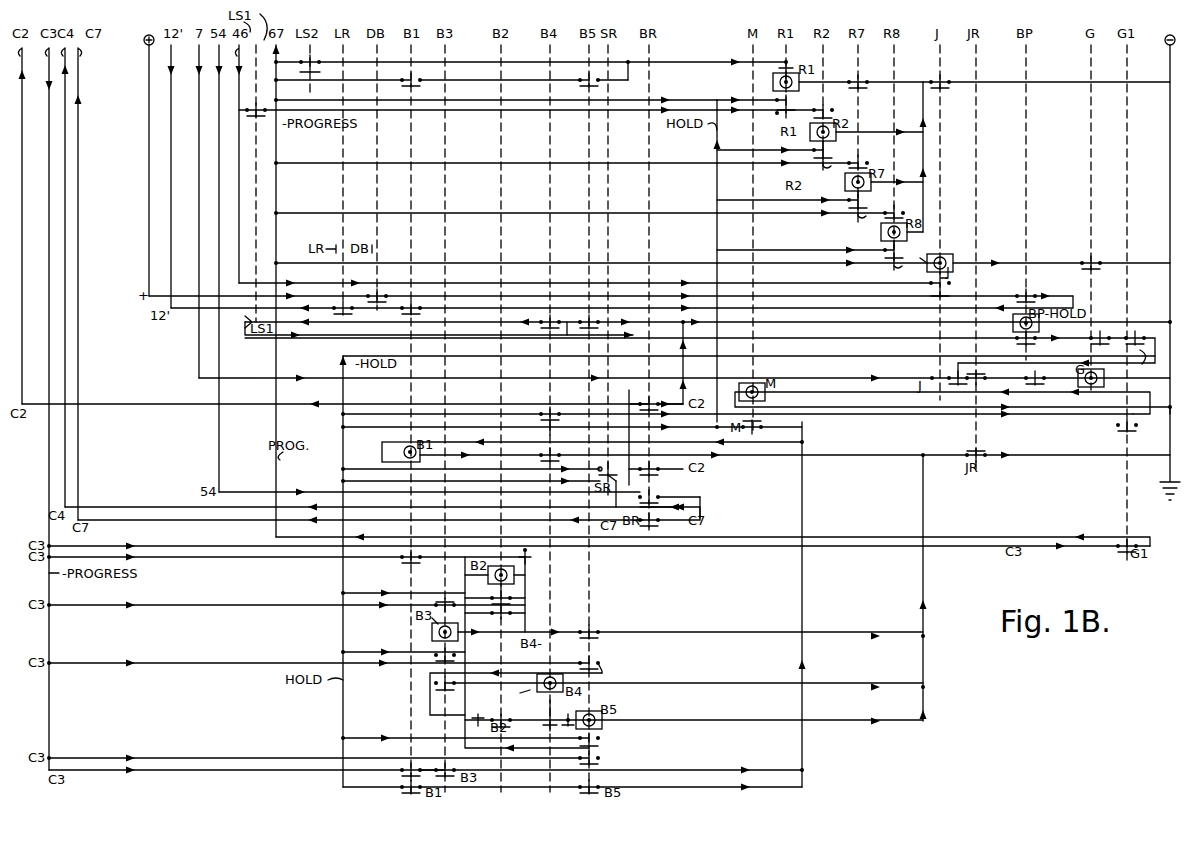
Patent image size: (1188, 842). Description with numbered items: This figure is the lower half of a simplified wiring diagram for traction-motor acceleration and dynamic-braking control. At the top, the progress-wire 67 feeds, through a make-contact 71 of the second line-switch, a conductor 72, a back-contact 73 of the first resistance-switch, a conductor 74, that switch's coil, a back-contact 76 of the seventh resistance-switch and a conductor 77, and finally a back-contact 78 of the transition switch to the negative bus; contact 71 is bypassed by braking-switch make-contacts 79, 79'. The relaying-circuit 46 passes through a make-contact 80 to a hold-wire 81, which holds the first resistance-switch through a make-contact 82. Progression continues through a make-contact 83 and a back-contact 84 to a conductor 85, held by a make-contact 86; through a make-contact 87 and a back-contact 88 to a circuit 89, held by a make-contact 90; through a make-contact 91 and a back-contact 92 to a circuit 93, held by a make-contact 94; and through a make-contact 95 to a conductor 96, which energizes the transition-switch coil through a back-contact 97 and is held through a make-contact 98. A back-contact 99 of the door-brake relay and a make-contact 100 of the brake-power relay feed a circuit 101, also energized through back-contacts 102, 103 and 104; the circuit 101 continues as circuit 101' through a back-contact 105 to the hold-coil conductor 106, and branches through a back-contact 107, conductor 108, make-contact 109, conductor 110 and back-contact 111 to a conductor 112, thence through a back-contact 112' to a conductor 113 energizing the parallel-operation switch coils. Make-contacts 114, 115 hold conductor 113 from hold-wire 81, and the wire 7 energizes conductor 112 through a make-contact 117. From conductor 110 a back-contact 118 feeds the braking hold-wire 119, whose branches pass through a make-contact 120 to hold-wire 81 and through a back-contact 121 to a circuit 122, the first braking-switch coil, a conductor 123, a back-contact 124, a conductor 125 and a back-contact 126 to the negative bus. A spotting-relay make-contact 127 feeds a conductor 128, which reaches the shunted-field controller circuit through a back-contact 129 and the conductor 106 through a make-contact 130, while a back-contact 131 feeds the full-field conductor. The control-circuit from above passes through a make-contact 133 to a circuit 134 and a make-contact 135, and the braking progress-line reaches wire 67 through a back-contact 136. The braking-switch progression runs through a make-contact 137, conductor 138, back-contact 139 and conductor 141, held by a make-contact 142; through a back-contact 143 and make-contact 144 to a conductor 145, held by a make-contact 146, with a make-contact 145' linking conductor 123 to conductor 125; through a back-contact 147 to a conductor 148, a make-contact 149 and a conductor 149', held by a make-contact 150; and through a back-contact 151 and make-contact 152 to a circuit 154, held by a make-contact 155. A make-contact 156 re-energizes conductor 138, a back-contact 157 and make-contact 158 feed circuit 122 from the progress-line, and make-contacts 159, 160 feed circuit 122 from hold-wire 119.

The wire 7 is at (677, 376).
The relaying-circuit 46 is at (581, 196).
The progress-wire 67 is at (716, 300).
The make-contact of line-switch LS2 71 is at (316, 59).
The conductor 72 is at (627, 63).
The back-contact of resistance-switch R1 73 is at (776, 64).
The conductor 74 is at (960, 82).
The relay contact R7 76 is at (858, 75).
The conductor 77 is at (925, 152).
The back-contact of transition-switch J 78 is at (945, 75).
The make-contact of braking-switch B1 79 is at (487, 76).
The make-contact of braking-switch B5 79' is at (594, 76).
The make-contact of line-switch LS1 80 is at (487, 94).
The hold-wire 81 is at (708, 253).
The make-contact of resistance-switch R1 82 is at (762, 103).
The make-contact of resistance-switch R1 83 is at (770, 117).
The back-contact of resistance-switch R2 84 is at (827, 106).
The conductor 85 is at (854, 136).
The make-contact of resistance-switch R2 86 is at (783, 151).
The make-contact of resistance-switch R2 87 is at (787, 169).
The back-contact of resistance-switch R7 88 is at (863, 157).
The circuit 89 is at (871, 186).
The make-contact of resistance-switch R7 90 is at (801, 201).
The make-contact of resistance-switch R7 91 is at (805, 219).
The back-contact of resistance-switch R8 92 is at (899, 207).
The circuit 93 is at (889, 236).
The make-contact of resistance-switch R8 94 is at (819, 251).
The make-contact of resistance-switch R8 95 is at (828, 269).
The conductor 96 is at (945, 253).
The back-contact of parallel-connection switch G 97 is at (966, 249).
The make-contact of transition-switch J 98 is at (948, 289).
The back-contact of door-brake relay DB 99 is at (592, 291).
The make-contact of brake-power relay BP 100 is at (1013, 291).
The circuit 101 is at (630, 296).
The conductor 101' is at (562, 331).
The back-contact of line-relay LR 102 is at (327, 311).
The back-contact of braking-switch B1 103 is at (398, 311).
The back-contact of braking-switch B4 104 is at (540, 317).
The back-contact of braking-switch B5 105 is at (597, 328).
The conductor 106 is at (681, 355).
The back-contact of line-switch LS1 107 is at (695, 317).
The conductor 108 is at (436, 336).
The make-contact of brake-power relay BP 109 is at (700, 354).
The conductor 110 is at (1100, 332).
The back-contact of ground-switch G1 111 is at (1142, 332).
The conductor 112 is at (963, 384).
The back-contact of series-motor switch JR 112' is at (990, 372).
The conductor 113 is at (953, 395).
The make-contact of switch M 114 is at (758, 409).
The make-contact of ground-switch G1 115 is at (1108, 402).
The make-contact of transition-switch J 117 is at (924, 370).
The back-contact of ground-switch G1 118 is at (1089, 346).
The hold-wire 119 is at (331, 571).
The make-contact of braking-switch B4 120 is at (737, 415).
The back-contact of braking-switch B4 121 is at (545, 432).
The circuit 122 is at (594, 604).
The conductor 123 is at (776, 536).
The back-contact of braking-switch B4 124 is at (563, 451).
The conductor 125 is at (931, 583).
The back-contact of series-motor switch JR 126 is at (986, 449).
The make-contact of spotting relay SR 127 is at (489, 463).
The conductor 128 is at (495, 430).
The back-contact of brake-relay BR 129 is at (656, 464).
The make-contact of brake-relay BR 130 is at (660, 394).
The back-contact of spotting relay SR 131 is at (630, 493).
The make-contact of brake-relay BR 133 is at (459, 489).
The circuit 134 is at (676, 500).
The make-contact of brake-relay BR 135 is at (655, 527).
The back-contact of ground-switch G1 136 is at (1114, 550).
The make-contact of braking-switch B1 137 is at (397, 560).
The conductor 138 is at (512, 648).
The back-contact of braking-switch B2 139 is at (537, 554).
The conductor 141 is at (495, 575).
The make-contact of braking-switch B2 142 is at (495, 595).
The back-contact of braking-switch B3 143 is at (434, 601).
The make-contact of braking-switch B2 144 is at (495, 612).
The conductor 145 is at (632, 623).
The make-contact of braking-switch B5 145' is at (601, 624).
The make-contact of braking-switch B3 146 is at (458, 655).
The back-contact of braking-switch B5 147 is at (599, 658).
The conductor 148 is at (510, 697).
The make-contact of braking-switch B3 149 is at (679, 687).
The conductor 149' is at (515, 697).
The make-contact of braking-switch B4 150 is at (694, 715).
The back-contact of braking-switch B2 151 is at (482, 713).
The make-contact of braking-switch B4 152 is at (536, 717).
The circuit 154 is at (572, 713).
The make-contact of braking-switch B5 155 is at (483, 738).
The make-contact of braking-switch B5 156 is at (601, 757).
The back-contact of braking-switch B1 157 is at (401, 765).
The make-contact of braking-switch B3 158 is at (450, 765).
The make-contact of braking-switch B1 159 is at (572, 790).
The make-contact of braking-switch B5 160 is at (574, 790).